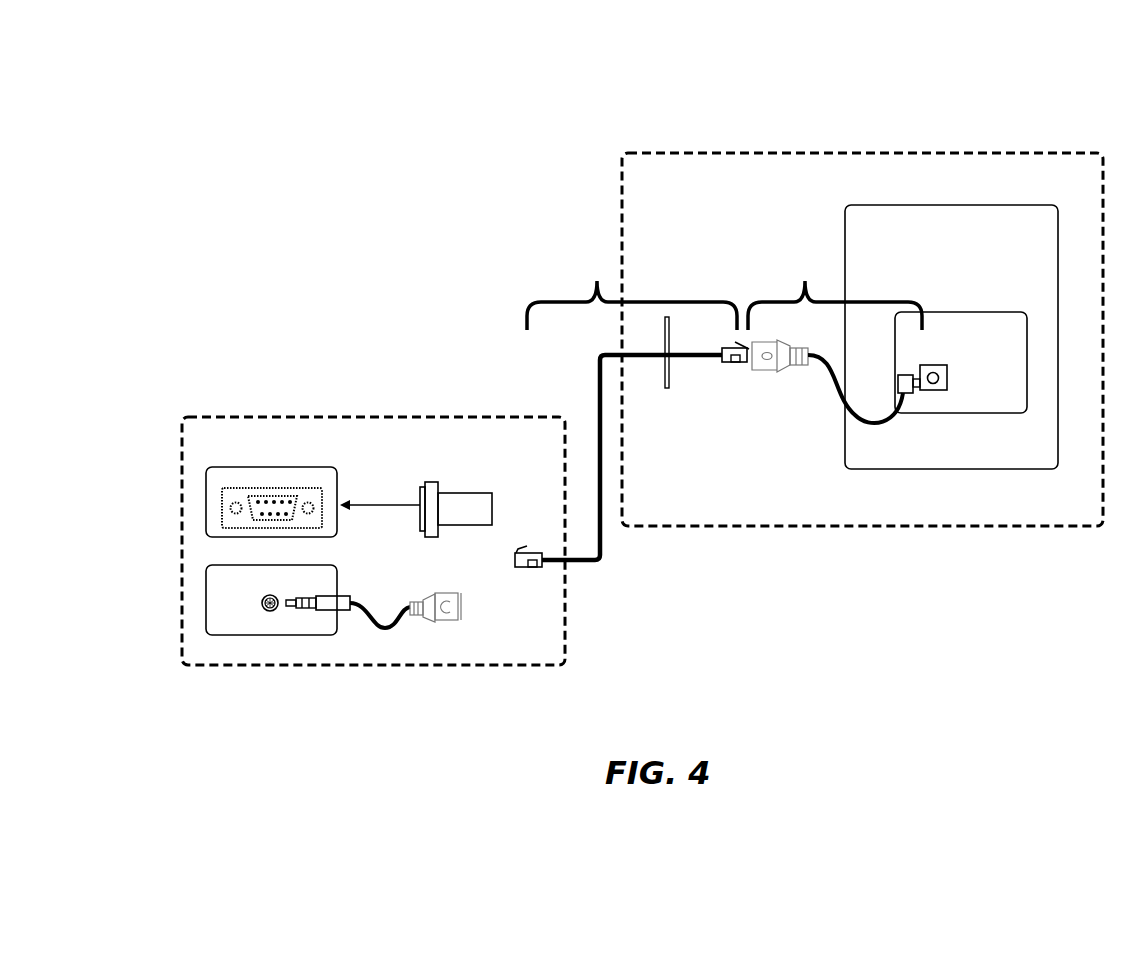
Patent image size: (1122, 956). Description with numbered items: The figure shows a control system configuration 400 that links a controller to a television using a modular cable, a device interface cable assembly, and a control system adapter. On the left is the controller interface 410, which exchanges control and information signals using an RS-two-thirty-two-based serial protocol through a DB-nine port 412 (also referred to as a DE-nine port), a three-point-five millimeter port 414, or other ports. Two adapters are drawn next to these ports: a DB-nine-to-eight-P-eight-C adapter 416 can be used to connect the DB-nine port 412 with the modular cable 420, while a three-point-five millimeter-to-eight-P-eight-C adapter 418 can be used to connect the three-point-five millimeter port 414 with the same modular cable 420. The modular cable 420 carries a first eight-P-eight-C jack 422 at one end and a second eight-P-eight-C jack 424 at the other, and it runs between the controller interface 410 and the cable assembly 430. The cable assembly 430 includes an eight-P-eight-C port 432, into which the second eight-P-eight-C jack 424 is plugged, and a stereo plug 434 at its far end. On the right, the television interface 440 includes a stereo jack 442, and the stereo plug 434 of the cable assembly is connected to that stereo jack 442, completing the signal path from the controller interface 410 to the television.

The control system configuration 400 is at (180, 64).
The controller interface 410 is at (297, 415).
The DB9 port 412 is at (206, 513).
The 3.5 mm port 414 is at (206, 607).
The DB9-8P8C adapter 416 is at (446, 510).
The 3.5 mm-8P8C adapter 418 is at (440, 617).
The modular cable 420 is at (632, 411).
The first 8P8C jack 422 is at (535, 567).
The second 8P8C jack 424 is at (740, 364).
The cable assembly 430 is at (835, 296).
The 8P8C port 432 is at (768, 372).
The stereo plug 434 is at (905, 395).
The television interface 440 is at (866, 157).
The stereo jack 442 is at (935, 392).